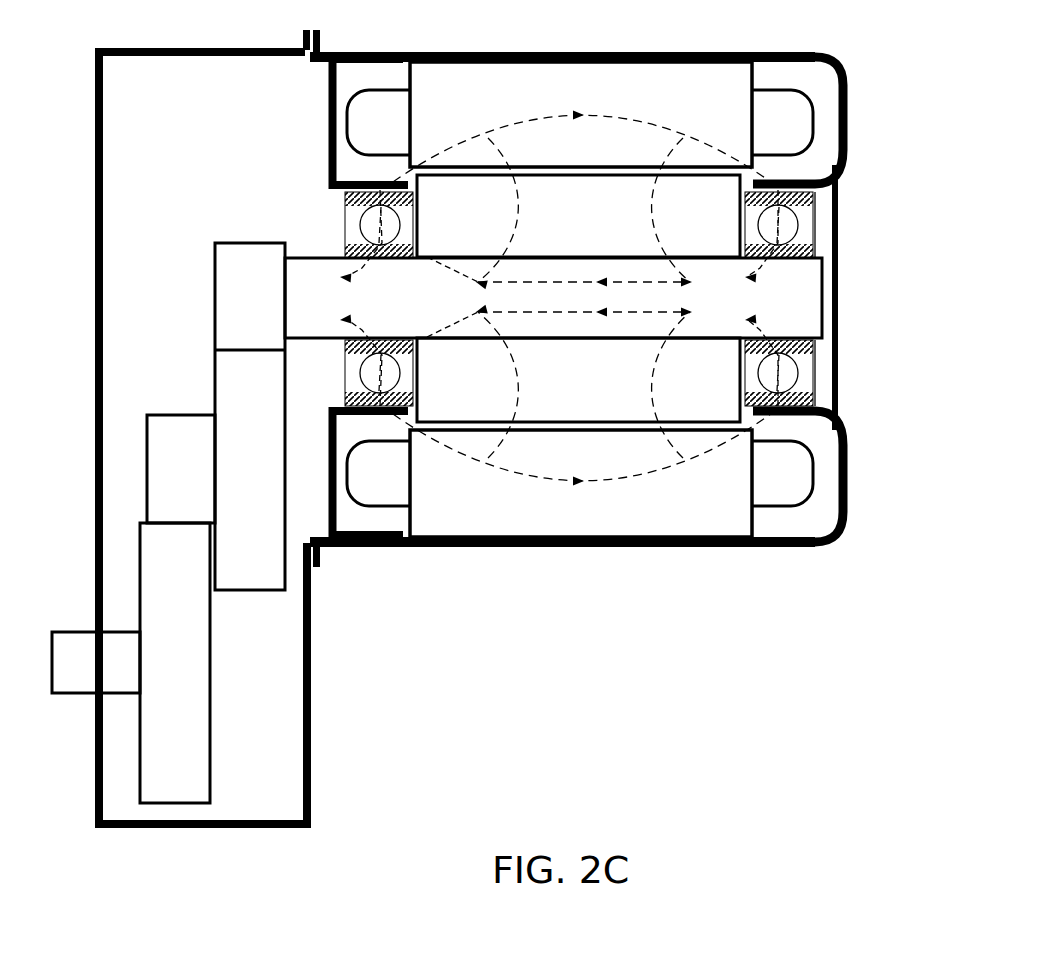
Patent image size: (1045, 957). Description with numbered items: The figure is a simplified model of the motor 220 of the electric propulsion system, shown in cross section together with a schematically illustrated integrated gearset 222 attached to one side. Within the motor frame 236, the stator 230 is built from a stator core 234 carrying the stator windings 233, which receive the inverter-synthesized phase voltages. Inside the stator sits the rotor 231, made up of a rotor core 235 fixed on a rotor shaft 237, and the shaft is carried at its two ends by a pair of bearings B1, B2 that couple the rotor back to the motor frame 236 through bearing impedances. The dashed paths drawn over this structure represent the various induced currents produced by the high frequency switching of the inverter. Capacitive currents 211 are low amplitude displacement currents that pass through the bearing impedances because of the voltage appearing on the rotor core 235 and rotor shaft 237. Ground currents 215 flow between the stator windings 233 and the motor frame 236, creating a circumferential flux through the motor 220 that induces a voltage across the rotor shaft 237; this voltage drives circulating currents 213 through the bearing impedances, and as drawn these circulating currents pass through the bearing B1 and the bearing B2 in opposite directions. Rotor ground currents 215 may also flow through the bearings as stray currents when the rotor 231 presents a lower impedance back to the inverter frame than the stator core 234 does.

The motor 220 is at (298, 118).
The integrated gearset 222 is at (172, 298).
The stator 230 is at (875, 165).
The rotor 231 is at (285, 228).
The stator windings 233 is at (400, 90).
The stator core 234 is at (598, 99).
The rotor core 235 is at (598, 226).
The motor frame 236 is at (320, 42).
The rotor shaft 237 is at (449, 306).
The capacitive currents 211 is at (517, 248).
The circulating currents 213 is at (604, 114).
The ground currents 215 is at (341, 321).
The bearing B1 is at (818, 243).
The bearing B2 is at (343, 242).